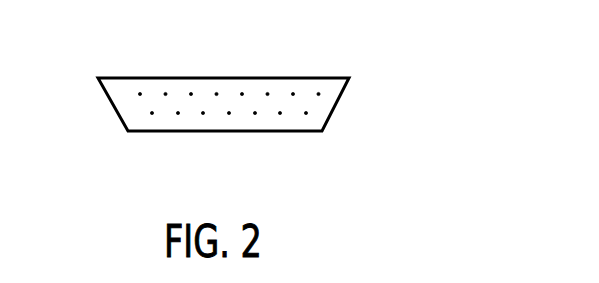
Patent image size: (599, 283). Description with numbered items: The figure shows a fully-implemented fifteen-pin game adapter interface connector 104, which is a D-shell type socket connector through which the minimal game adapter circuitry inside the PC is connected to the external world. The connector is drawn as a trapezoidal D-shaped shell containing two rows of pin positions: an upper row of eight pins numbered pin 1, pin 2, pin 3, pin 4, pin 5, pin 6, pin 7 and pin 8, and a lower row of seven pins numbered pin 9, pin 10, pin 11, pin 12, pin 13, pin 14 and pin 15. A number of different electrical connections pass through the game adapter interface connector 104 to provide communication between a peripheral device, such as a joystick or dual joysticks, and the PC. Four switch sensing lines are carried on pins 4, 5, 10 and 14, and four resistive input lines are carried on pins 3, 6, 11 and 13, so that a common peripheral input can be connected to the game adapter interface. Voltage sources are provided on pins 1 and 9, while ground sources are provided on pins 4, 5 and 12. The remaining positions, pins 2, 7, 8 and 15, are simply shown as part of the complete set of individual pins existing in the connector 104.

The game adapter interface connector 104 is at (335, 111).
The pin 1 is at (137, 69).
The pin 2 is at (163, 69).
The pin 3 is at (188, 69).
The pin 4 is at (214, 69).
The pin 5 is at (239, 69).
The pin 6 is at (265, 69).
The pin 7 is at (292, 69).
The pin 8 is at (317, 69).
The pin 9 is at (151, 142).
The pin 10 is at (178, 142).
The pin 11 is at (205, 142).
The pin 12 is at (232, 142).
The pin 13 is at (258, 142).
The pin 14 is at (285, 142).
The pin 15 is at (314, 142).